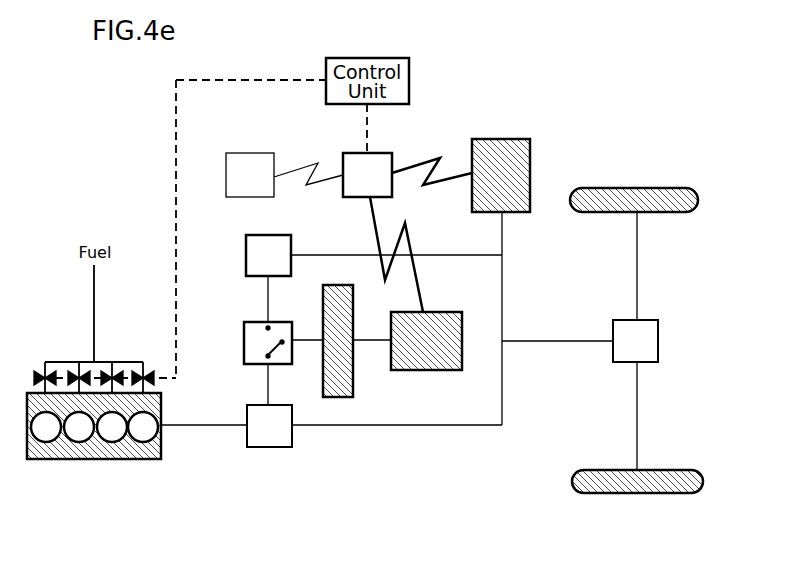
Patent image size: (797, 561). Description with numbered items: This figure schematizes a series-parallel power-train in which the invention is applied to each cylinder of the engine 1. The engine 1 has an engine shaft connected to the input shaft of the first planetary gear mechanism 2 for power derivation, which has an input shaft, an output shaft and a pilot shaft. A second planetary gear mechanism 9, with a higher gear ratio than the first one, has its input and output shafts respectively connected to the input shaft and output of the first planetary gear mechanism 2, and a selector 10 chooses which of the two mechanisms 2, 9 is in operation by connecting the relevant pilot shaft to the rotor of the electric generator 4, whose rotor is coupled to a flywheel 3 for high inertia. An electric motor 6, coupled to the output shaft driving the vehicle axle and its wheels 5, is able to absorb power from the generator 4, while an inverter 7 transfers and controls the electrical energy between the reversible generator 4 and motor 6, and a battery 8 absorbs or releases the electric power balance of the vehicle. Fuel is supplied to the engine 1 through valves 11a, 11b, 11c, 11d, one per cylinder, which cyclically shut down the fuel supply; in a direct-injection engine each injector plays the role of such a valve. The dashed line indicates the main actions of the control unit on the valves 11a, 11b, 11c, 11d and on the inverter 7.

The engine 1 is at (97, 460).
The first planetary gear mechanism 2 is at (262, 448).
The flywheel 3 is at (347, 397).
The electric generator 4 is at (420, 370).
The wheels 5 is at (572, 485).
The electric motor 6 is at (472, 140).
The inverter 7 is at (343, 152).
The battery 8 is at (246, 153).
The second planetary gear mechanism 9 is at (246, 243).
The selector 10 is at (244, 352).
The valve 11a is at (42, 374).
The valve 11b is at (75, 374).
The valve 11c is at (117, 374).
The valve 11d is at (152, 374).